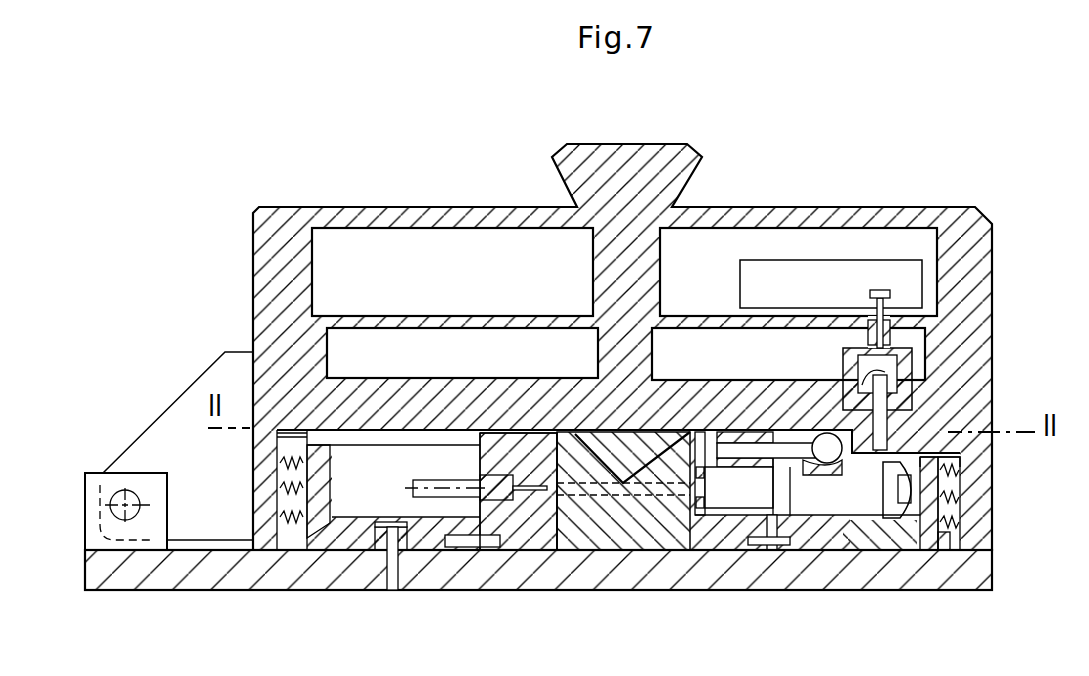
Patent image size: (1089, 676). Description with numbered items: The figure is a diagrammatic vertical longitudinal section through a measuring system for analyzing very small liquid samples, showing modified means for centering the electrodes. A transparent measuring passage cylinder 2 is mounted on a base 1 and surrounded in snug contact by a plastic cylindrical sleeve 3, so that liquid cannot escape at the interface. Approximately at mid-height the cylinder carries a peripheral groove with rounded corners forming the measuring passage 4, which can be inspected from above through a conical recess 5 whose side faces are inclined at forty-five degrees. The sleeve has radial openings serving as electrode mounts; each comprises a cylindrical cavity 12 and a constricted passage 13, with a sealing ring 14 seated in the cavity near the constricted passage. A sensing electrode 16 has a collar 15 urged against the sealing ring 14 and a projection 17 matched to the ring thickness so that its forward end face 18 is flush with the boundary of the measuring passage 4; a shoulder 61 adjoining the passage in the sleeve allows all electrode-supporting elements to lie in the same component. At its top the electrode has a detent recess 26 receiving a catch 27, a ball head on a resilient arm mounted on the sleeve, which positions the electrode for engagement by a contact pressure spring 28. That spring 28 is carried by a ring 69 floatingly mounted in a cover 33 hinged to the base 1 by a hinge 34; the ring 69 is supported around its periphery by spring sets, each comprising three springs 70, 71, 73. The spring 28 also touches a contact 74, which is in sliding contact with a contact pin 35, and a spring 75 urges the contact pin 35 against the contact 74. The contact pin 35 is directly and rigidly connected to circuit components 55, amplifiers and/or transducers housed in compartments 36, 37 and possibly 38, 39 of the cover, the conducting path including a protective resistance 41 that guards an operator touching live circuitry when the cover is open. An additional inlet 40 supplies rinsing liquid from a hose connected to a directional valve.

The base 1 is at (800, 577).
The measuring passage cylinder 2 is at (606, 545).
The cylindrical sleeve 3 is at (517, 550).
The measuring passage 4 is at (560, 483).
The recess 5 is at (614, 432).
The cylindrical cavity 12 is at (738, 540).
The constricted passage 13 is at (687, 502).
The sealing ring 14 is at (699, 462).
The collar 15 is at (708, 466).
The sensing electrode 16 is at (842, 505).
The projection 17 is at (706, 488).
The forward end face 18 is at (687, 488).
The detent recess 26 is at (799, 486).
The catch 27 is at (836, 450).
The spring 28 is at (938, 478).
The cover 33 is at (893, 212).
The hinge 34 is at (115, 498).
The contact pin 35 is at (893, 447).
The compartment 36 is at (783, 240).
The compartment 37 is at (484, 240).
The compartment 38 is at (694, 343).
The compartment 39 is at (366, 343).
The additional inlet 40 is at (453, 480).
The protective resistance 41 is at (856, 370).
The circuit components 55 is at (742, 270).
The shoulder 61 is at (899, 487).
The ring 69 is at (927, 503).
The spring 70 is at (962, 463).
The spring 71 is at (960, 495).
The spring 73 is at (950, 540).
The contact 74 is at (962, 432).
The spring 75 is at (915, 362).